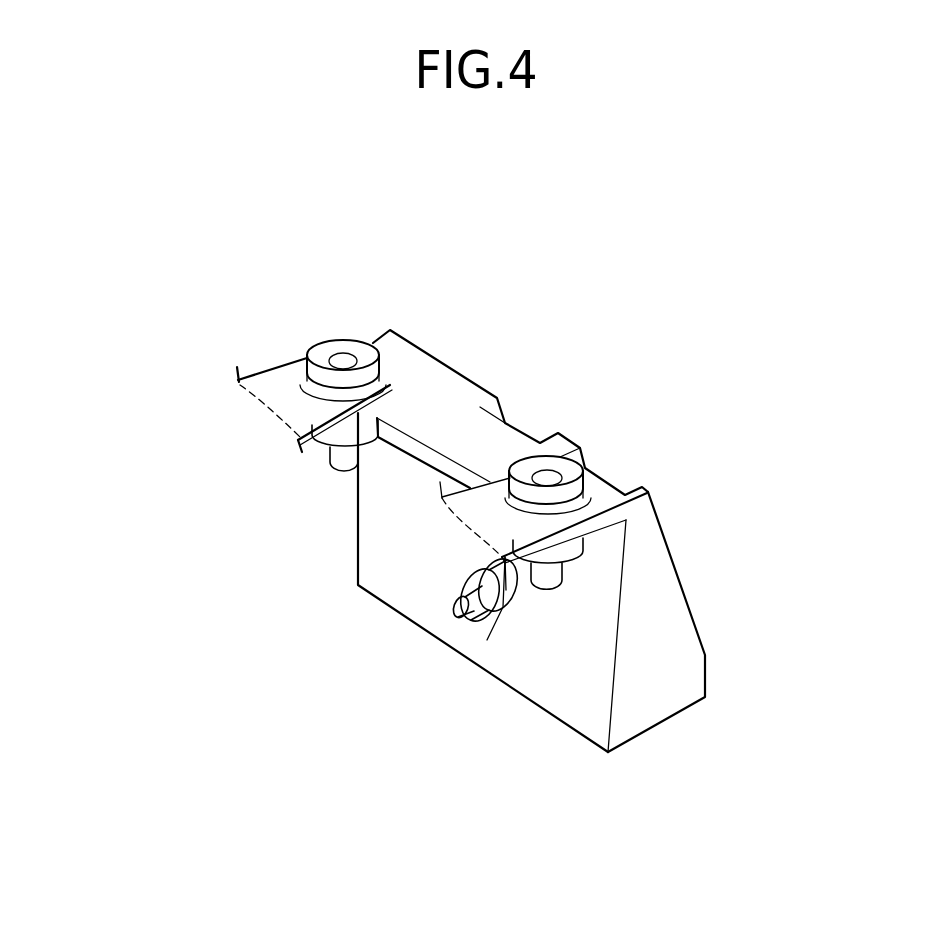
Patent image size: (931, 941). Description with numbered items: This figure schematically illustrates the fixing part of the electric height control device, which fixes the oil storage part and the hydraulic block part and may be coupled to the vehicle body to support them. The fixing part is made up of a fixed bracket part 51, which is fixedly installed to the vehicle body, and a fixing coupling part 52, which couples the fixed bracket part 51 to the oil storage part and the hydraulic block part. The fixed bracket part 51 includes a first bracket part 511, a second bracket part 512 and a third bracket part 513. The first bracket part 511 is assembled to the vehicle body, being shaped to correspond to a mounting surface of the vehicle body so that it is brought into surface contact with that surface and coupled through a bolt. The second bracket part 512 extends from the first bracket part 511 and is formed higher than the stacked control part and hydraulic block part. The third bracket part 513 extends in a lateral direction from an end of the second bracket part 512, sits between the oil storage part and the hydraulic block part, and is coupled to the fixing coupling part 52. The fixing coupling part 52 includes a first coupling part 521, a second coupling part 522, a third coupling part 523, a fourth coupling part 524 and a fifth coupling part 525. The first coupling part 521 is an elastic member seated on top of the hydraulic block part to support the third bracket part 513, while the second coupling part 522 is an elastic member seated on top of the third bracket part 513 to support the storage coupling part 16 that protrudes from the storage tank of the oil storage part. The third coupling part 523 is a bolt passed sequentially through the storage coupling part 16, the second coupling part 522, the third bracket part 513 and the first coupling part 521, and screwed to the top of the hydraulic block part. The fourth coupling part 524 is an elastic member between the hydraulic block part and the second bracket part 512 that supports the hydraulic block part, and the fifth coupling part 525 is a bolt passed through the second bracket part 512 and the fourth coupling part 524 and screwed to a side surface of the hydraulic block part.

The storage coupling part 16 is at (268, 387).
The fixed bracket part 51 is at (545, 630).
The first bracket part 511 is at (653, 725).
The second bracket part 512 is at (588, 728).
The third bracket part 513 is at (597, 528).
The fixing coupling part 52 is at (334, 516).
The first coupling part 521 is at (363, 447).
The second coupling part 522 is at (327, 432).
The third coupling part 523 is at (340, 393).
The fourth coupling part 524 is at (500, 615).
The fifth coupling part 525 is at (452, 607).